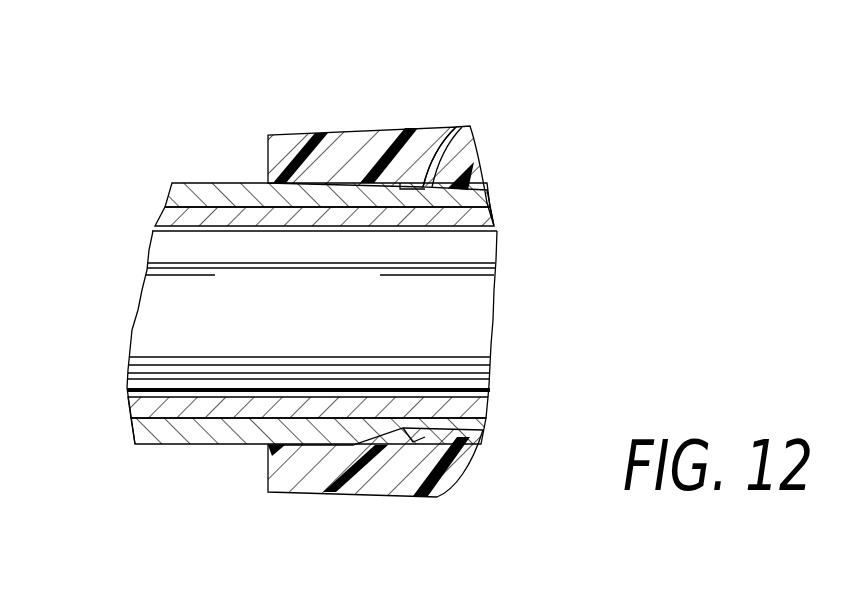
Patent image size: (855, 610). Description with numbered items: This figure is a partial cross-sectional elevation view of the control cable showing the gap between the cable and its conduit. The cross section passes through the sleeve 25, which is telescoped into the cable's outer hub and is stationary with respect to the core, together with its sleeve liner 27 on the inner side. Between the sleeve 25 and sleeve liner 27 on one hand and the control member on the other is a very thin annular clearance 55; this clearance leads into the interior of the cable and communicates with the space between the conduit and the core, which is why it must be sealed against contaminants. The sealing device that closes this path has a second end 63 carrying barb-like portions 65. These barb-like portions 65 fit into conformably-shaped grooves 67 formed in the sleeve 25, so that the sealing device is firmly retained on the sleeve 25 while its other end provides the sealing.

The sleeve 25 is at (172, 183).
The sleeve liner 27 is at (157, 215).
The annular clearance 55 is at (237, 229).
The second end 63 is at (343, 136).
The barb-like portions 65 is at (495, 68).
The grooves 67 is at (403, 428).